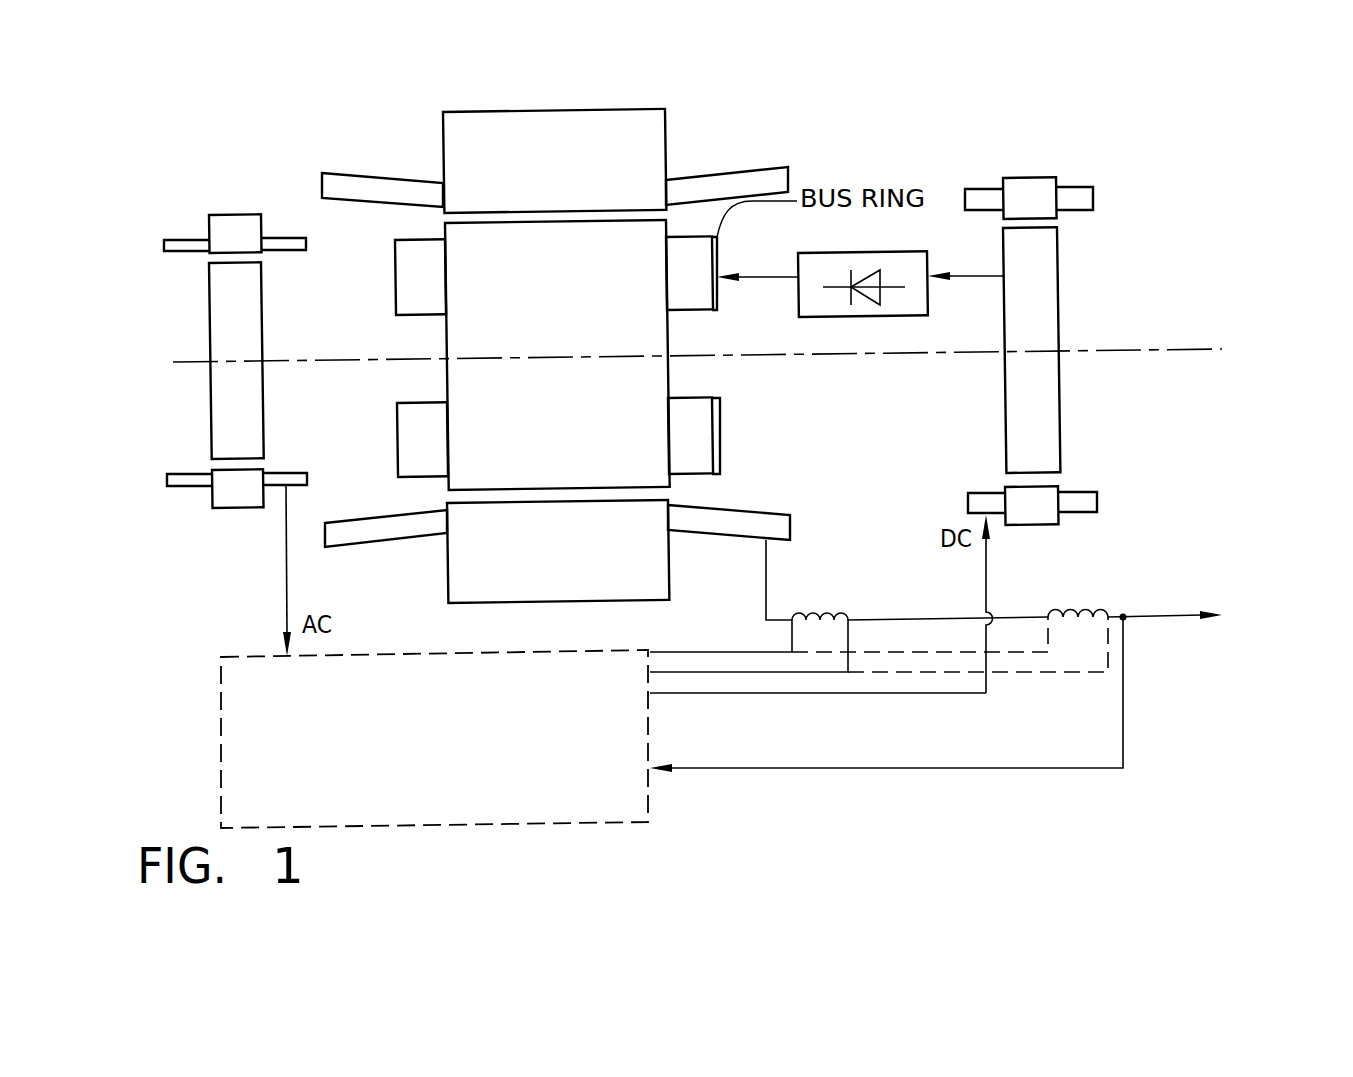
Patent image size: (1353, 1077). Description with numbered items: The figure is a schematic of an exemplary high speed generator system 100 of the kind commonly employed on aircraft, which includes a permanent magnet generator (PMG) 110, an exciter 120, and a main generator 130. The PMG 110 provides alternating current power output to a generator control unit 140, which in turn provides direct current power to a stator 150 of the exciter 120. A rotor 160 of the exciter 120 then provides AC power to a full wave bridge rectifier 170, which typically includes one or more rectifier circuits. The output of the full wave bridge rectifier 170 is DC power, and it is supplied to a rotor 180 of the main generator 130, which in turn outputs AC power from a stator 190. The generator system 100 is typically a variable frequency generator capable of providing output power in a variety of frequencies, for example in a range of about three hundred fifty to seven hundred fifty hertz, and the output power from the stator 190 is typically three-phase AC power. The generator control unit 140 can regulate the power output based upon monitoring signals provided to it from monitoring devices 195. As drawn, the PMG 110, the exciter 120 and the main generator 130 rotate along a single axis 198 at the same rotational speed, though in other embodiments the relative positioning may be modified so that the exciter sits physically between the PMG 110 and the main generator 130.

The high speed generator system 100 is at (885, 67).
The permanent magnet generator (PMG) 110 is at (262, 54).
The exciter 120 is at (1076, 299).
The main generator 130 is at (596, 52).
The generator control unit 140 is at (256, 655).
The stator 150 is at (1098, 502).
The rotor 160 is at (1058, 295).
The full wave bridge rectifier 170 is at (860, 318).
The rotor 180 is at (667, 334).
The stator 190 is at (668, 573).
The monitoring devices 195 is at (790, 640).
The single axis 198 is at (1115, 350).